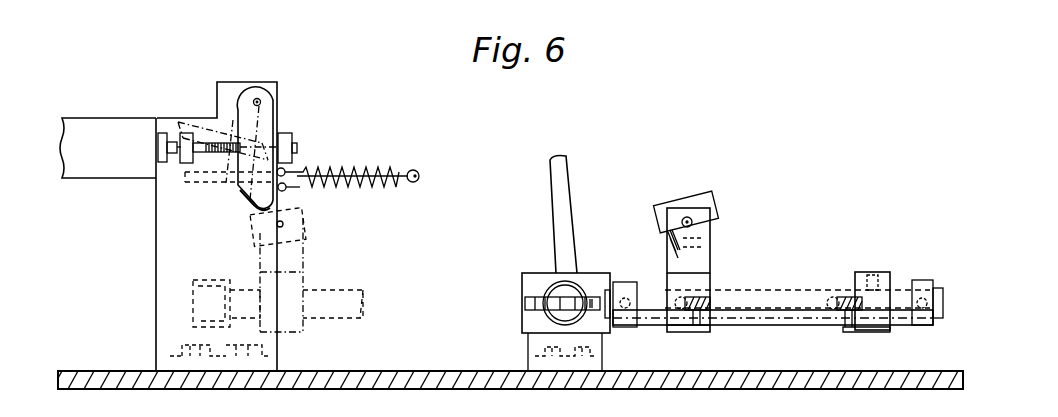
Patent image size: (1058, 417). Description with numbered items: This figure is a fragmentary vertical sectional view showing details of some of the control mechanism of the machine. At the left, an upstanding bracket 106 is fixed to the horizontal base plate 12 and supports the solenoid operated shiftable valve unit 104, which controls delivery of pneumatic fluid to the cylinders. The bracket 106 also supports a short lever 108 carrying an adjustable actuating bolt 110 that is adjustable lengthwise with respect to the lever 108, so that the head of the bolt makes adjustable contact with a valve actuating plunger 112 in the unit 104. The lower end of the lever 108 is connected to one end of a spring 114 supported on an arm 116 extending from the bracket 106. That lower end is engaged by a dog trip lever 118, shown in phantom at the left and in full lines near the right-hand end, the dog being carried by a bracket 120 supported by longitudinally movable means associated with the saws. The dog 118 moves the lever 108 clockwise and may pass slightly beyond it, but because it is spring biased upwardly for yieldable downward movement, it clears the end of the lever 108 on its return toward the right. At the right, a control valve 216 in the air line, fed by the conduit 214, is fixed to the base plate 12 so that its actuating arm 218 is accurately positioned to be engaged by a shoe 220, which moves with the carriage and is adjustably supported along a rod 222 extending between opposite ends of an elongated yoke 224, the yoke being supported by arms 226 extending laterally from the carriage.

The base plate 12 is at (400, 371).
The solenoid operated shiftable valve unit 104 is at (97, 127).
The upstanding bracket 106 is at (156, 241).
The short lever 108 is at (263, 123).
The adjustable actuating bolt 110 is at (208, 138).
The valve actuating plunger 112 is at (167, 135).
The spring 114 is at (317, 167).
The arm 116 is at (373, 167).
The dog trip lever 118 is at (312, 228).
The bracket 120 is at (305, 260).
The rod 222 is at (360, 290).
The conduit 214 is at (570, 186).
The control valve 216 is at (537, 272).
The actuating arm 218 is at (587, 272).
The shoe 220 is at (897, 280).
The elongated yoke 224 is at (773, 322).
The arms 226 is at (707, 300).